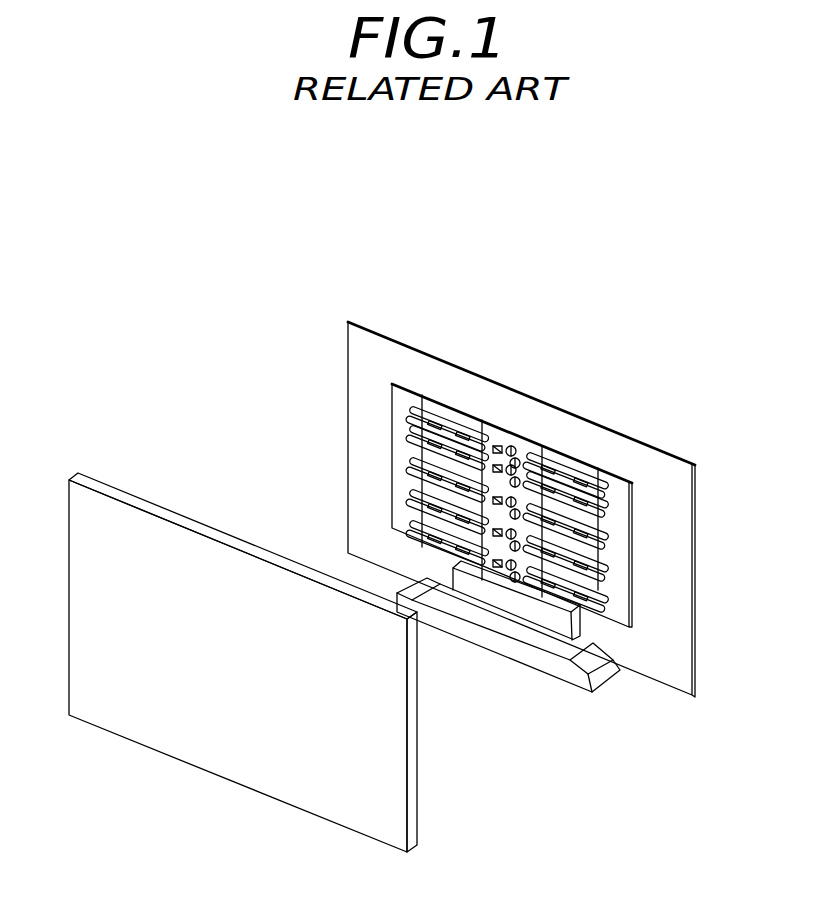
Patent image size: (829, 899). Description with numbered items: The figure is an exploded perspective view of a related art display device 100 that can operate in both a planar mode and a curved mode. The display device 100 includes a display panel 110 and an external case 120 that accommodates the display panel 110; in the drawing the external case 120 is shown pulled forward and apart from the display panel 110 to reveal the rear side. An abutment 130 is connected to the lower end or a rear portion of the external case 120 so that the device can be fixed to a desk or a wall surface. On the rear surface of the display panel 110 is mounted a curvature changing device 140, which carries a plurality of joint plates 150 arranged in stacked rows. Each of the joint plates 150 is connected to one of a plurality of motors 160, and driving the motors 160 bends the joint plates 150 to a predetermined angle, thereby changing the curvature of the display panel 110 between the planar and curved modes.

The display device 100 is at (618, 347).
The display panel 110 is at (673, 577).
The external case 120 is at (417, 770).
The abutment 130 is at (537, 657).
The curvature changing device 140 is at (652, 520).
The joint plates 150 is at (464, 410).
The motors 160 is at (518, 433).